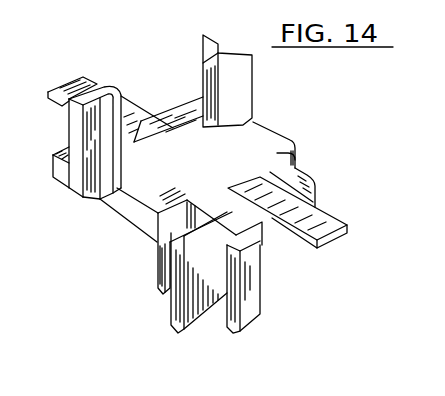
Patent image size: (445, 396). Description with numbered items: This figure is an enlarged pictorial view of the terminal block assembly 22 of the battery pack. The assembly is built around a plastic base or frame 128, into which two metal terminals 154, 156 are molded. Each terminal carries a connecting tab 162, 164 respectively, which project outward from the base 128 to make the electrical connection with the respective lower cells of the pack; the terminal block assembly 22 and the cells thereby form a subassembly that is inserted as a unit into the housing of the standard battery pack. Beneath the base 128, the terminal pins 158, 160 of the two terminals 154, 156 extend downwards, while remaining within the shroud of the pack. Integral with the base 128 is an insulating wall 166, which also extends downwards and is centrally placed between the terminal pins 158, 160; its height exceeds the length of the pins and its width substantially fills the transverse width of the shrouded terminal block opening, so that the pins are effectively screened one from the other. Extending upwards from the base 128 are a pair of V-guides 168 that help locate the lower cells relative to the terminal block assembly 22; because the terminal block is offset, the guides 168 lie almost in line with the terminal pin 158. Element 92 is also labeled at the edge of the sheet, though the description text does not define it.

The leader 92 is at (12, 0).
The plastic base or frame 128 is at (273, 127).
The V-guides 168 is at (67, 125).
The connecting tab 162 is at (92, 79).
The connecting tab 164 is at (329, 210).
The terminal pin 158 is at (157, 257).
The insulating wall 166 is at (170, 305).
The terminal pin 160 is at (262, 277).
The terminal block assembly 22 is at (90, 230).
The metal terminal 154 is at (138, 284).
The metal terminal 156 is at (270, 303).